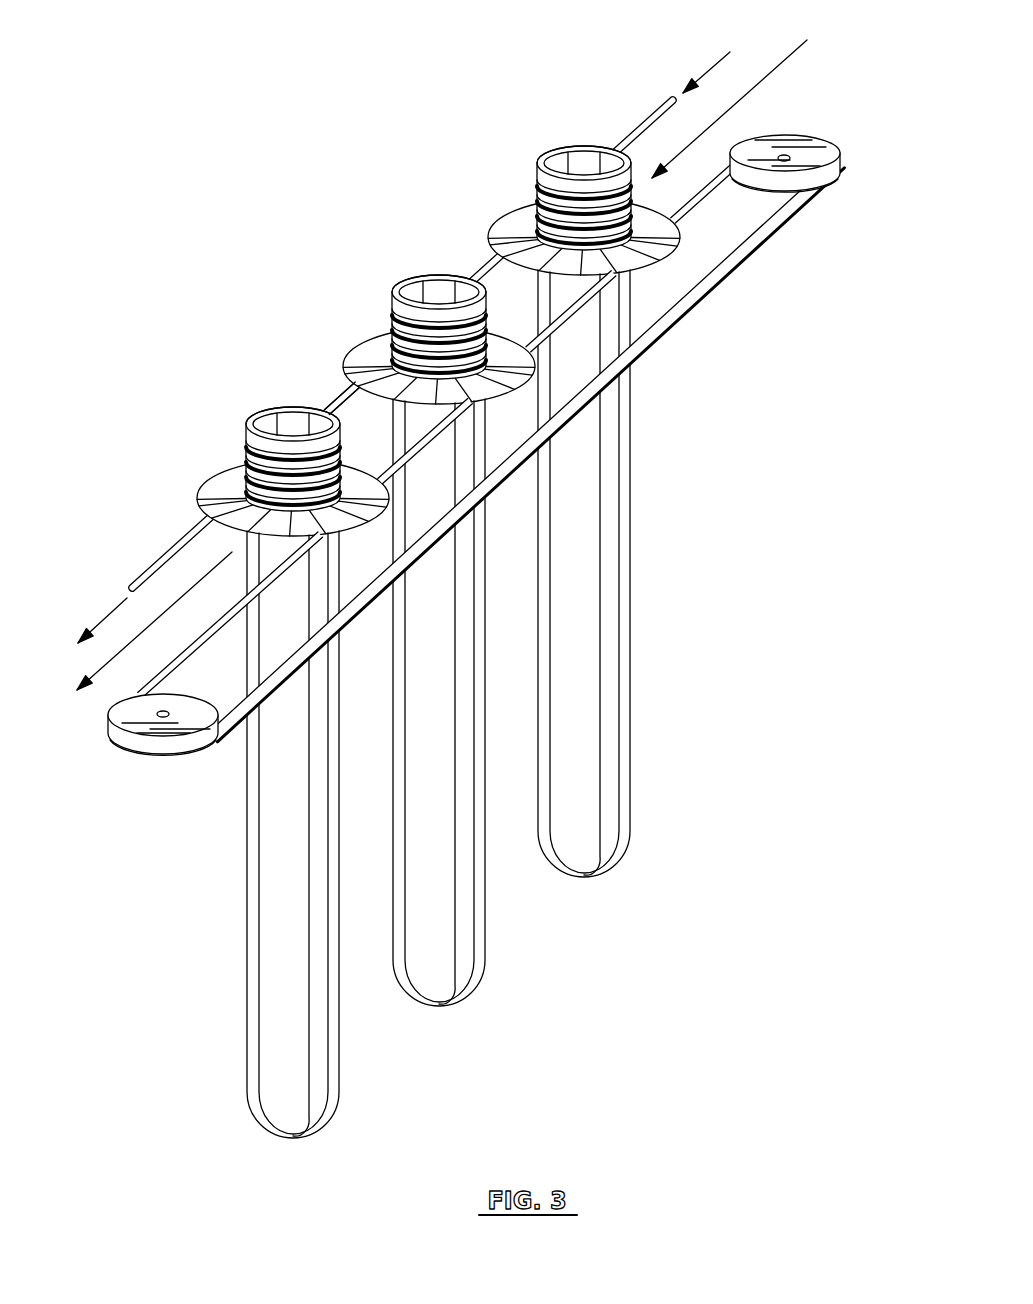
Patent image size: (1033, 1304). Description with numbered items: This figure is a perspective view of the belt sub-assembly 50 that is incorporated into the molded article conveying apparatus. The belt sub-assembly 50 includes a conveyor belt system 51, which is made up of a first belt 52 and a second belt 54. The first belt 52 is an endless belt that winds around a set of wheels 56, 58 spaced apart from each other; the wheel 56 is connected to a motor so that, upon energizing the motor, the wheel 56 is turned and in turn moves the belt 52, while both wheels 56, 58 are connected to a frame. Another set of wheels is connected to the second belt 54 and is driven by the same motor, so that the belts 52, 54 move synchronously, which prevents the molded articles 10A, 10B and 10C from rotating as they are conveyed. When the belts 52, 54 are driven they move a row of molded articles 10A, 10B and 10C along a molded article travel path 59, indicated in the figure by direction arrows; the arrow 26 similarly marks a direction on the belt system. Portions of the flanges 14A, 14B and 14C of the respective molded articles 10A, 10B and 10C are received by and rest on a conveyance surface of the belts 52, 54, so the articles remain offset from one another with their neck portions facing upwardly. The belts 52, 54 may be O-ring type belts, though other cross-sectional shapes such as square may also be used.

The belt sub-assembly 50 is at (338, 98).
The molded article 10A is at (245, 426).
The molded article 10B is at (394, 302).
The molded article 10C is at (537, 158).
The flange 14A is at (205, 475).
The flange 14B is at (362, 340).
The flange 14C is at (503, 214).
The guide rail 26 is at (427, 607).
The conveyor belt system 51 is at (273, 298).
The first belt 52 is at (342, 392).
The second belt 54 is at (328, 393).
The wheel 56 is at (196, 720).
The wheel 58 is at (815, 166).
The molded article travel path 59 is at (780, 66).